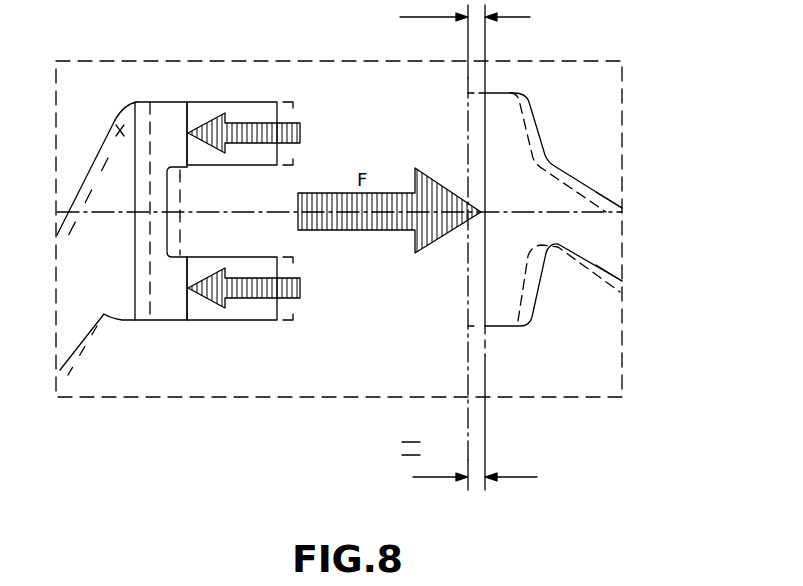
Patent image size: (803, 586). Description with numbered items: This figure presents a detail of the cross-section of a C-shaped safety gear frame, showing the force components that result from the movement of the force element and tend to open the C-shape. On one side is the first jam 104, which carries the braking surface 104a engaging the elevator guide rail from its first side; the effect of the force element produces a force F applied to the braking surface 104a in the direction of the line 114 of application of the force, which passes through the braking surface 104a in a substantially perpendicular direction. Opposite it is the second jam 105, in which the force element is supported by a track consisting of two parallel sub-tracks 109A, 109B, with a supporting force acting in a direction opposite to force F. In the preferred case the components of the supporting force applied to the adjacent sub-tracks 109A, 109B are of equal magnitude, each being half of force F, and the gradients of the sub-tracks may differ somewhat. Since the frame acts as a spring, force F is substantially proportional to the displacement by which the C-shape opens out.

The first jam 104 is at (532, 105).
The braking surface 104a is at (487, 283).
The second jam 105 is at (117, 118).
The first sub-track 109A is at (187, 120).
The second sub-track 109B is at (193, 312).
The line of application of the force 114 is at (605, 210).